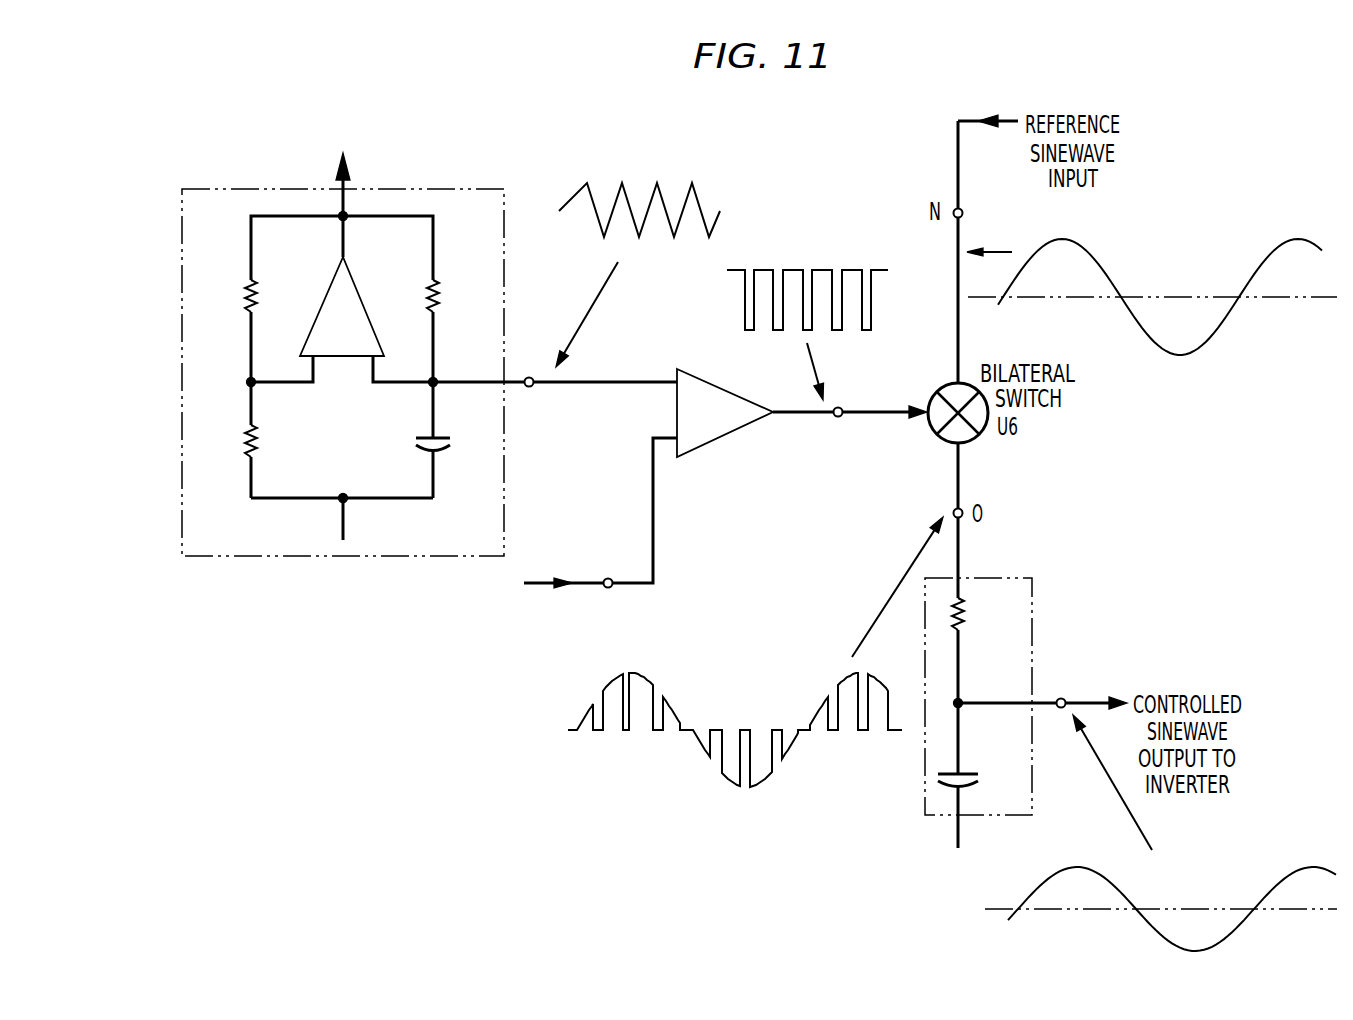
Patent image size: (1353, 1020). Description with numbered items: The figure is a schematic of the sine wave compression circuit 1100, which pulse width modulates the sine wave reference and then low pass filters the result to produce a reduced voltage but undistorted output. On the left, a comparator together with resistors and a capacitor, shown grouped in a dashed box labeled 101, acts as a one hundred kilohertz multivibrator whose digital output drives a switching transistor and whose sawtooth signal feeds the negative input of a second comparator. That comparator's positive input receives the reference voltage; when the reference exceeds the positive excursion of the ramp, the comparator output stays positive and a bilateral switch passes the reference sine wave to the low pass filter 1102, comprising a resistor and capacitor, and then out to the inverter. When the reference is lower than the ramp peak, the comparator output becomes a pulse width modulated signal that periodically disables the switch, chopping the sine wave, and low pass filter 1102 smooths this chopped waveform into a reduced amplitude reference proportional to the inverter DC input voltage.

The triangle wave oscillator 101 is at (182, 234).
The sine wave compression circuit 1100 is at (903, 875).
The low pass filter 1102 is at (1008, 578).